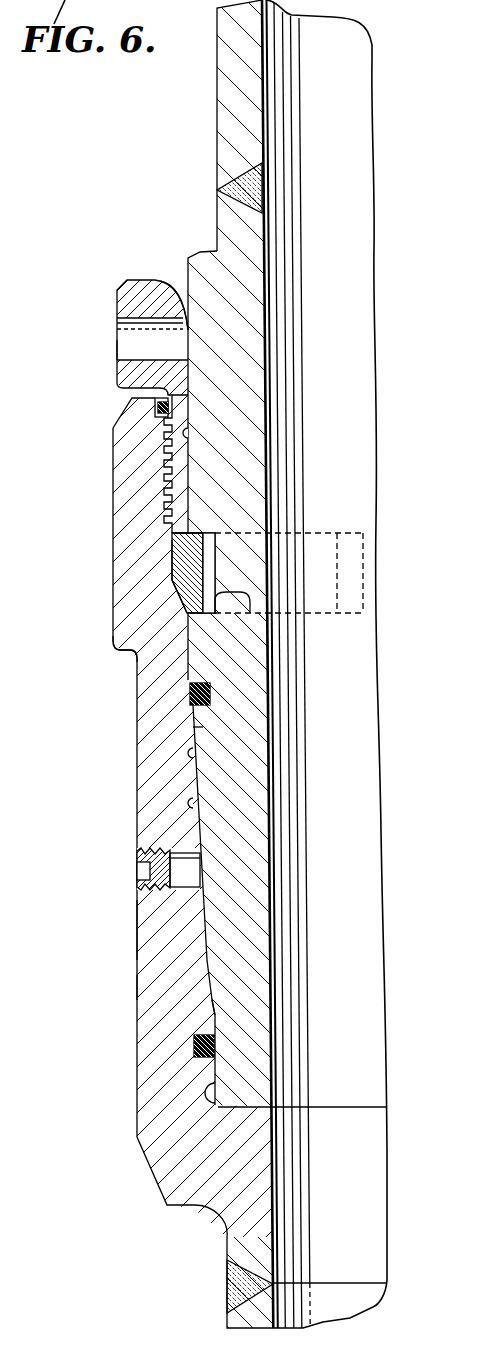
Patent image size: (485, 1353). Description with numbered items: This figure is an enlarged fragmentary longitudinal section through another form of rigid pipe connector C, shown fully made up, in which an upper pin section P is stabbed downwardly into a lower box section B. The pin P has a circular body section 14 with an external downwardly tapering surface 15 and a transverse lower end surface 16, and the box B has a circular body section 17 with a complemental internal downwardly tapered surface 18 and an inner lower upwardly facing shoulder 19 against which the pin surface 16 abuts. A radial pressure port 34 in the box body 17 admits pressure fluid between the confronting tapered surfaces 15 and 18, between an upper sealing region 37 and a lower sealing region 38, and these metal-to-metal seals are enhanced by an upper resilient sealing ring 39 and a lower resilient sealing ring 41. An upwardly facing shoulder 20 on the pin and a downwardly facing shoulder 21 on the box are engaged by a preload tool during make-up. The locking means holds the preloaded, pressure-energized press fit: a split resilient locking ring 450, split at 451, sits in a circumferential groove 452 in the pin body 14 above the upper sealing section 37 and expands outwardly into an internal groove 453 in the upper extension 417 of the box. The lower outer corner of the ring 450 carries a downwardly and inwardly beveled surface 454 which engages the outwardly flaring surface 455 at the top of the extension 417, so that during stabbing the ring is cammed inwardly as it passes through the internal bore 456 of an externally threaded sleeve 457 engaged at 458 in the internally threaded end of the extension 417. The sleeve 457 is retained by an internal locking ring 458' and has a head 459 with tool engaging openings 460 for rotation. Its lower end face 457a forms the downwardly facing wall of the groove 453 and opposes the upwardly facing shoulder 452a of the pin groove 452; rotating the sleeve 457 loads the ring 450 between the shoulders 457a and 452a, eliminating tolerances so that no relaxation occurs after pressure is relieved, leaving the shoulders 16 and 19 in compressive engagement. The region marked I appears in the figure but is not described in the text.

The circular body section of the pin 14 is at (255, 965).
The external downwardly tapering surface 15 is at (193, 805).
The lower end surface 16 is at (253, 1107).
The circular body section of the box 17 is at (162, 800).
The internal downwardly tapered surface 18 is at (193, 753).
The inner lower transversely extended shoulder 19 is at (253, 1107).
The upwardly facing shoulder 20 is at (205, 245).
The downwardly facing shoulder 21 is at (112, 652).
The radial pressure port 34 is at (193, 870).
The upper opposed sealing region 37 is at (193, 727).
The lower opposed sealing region 38 is at (212, 1012).
The upper annular resilient sealing ring 39 is at (190, 694).
The lower annular resilient sealing ring 41 is at (194, 1045).
The upper extension of the box 417 is at (128, 497).
The split resilient locking ring 450 is at (172, 557).
The split 451 is at (358, 556).
The circumferential groove 452 is at (208, 548).
The upwardly facing shoulder of the pin groove 452a is at (250, 613).
The internal groove 453 is at (172, 589).
The downwardly and inwardly beveled surface 454 is at (176, 604).
The outwardly flaring surface 455 is at (180, 275).
The internal bore 456 is at (192, 436).
The externally threaded sleeve 457 is at (178, 408).
The end face of the threaded sleeve 457a is at (172, 543).
The threaded engagement 458 is at (95, 464).
The internal locking ring 458' is at (91, 404).
The head 459 is at (125, 298).
The tool engaging openings 460 is at (140, 358).
The box section B is at (134, 932).
The pipe connector C is at (88, 987).
The interface I is at (165, 573).
The pin section P is at (278, 928).